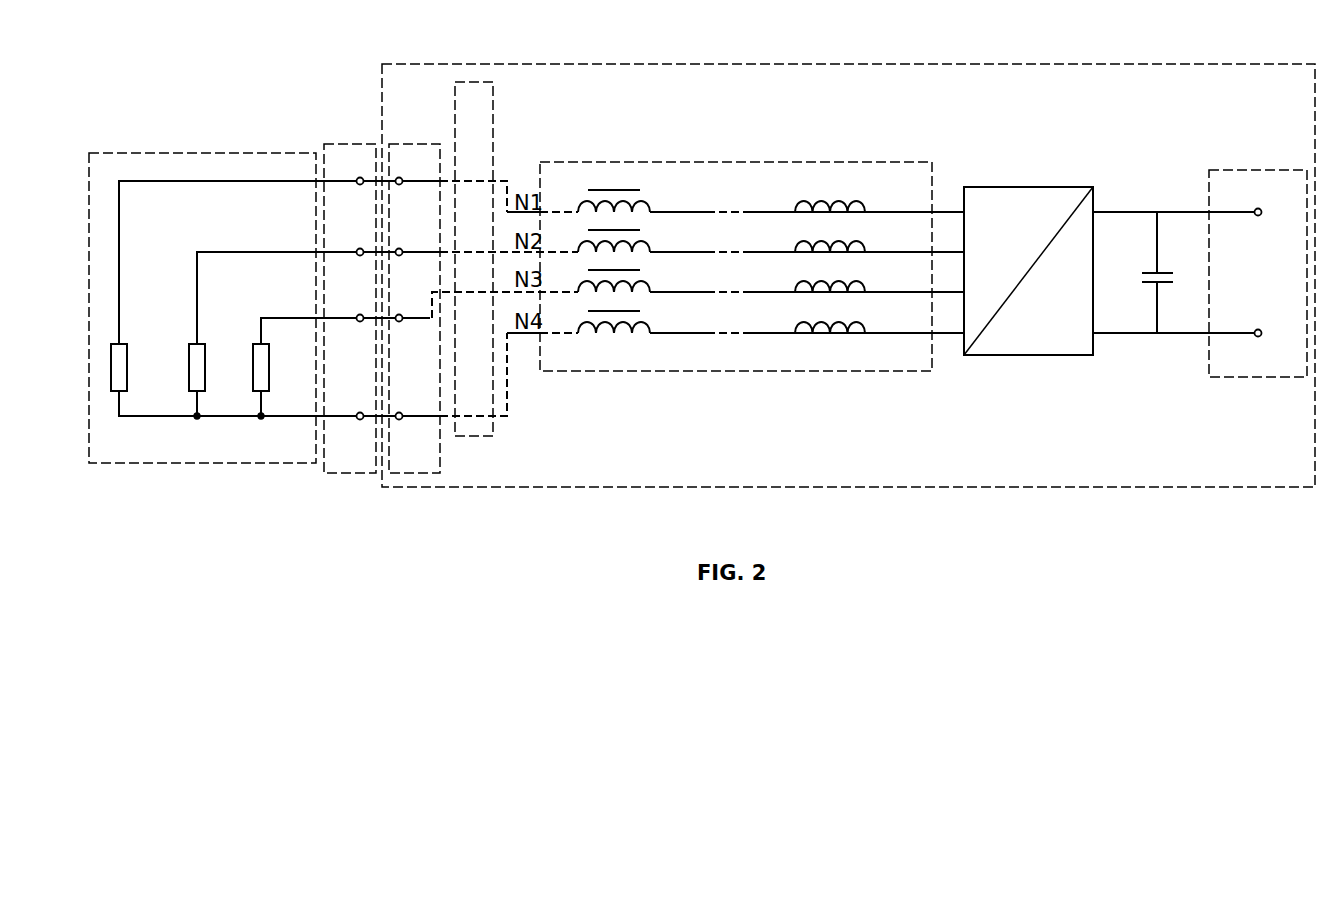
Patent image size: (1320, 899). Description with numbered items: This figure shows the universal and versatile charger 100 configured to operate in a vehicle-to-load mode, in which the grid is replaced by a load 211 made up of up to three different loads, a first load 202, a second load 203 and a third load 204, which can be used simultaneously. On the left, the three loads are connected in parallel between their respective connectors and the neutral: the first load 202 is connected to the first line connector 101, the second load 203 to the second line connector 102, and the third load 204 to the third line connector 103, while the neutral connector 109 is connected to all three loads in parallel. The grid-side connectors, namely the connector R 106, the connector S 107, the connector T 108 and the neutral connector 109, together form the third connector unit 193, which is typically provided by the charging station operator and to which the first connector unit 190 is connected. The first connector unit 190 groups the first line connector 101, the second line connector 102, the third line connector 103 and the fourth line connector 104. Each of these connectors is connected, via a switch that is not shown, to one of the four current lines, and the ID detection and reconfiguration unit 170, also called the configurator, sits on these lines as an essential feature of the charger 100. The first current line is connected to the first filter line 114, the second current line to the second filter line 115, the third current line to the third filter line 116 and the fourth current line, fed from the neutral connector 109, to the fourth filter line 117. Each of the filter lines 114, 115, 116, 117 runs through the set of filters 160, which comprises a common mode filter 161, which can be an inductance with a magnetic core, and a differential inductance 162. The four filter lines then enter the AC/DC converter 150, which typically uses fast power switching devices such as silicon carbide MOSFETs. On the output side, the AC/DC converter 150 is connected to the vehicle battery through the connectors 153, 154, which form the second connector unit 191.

The charger 100 is at (848, 254).
The L1 connector 101 is at (412, 184).
The L2 connector 102 is at (412, 254).
The L3 connector 103 is at (412, 320).
The L4 connector 104 is at (412, 418).
The R connector 106 is at (350, 184).
The S connector 107 is at (350, 254).
The T connector 108 is at (350, 320).
The N connector 109 is at (350, 418).
The filter line 114 is at (807, 196).
The filter line 115 is at (771, 237).
The filter line 116 is at (771, 277).
The filter line 117 is at (771, 318).
The AC/DC converter 150 is at (1028, 257).
The connector 153 is at (1264, 224).
The connector 154 is at (1262, 344).
The set of filters 160 is at (736, 252).
The common mode filter 161 is at (578, 165).
The differential inductance 162 is at (836, 165).
The ID detection and reconfiguration unit 170 is at (475, 274).
The first connector unit 190 is at (414, 295).
The second connector unit 191 is at (1258, 259).
The third connector unit 193 is at (350, 295).
The load R1 202 is at (141, 357).
The load R2 203 is at (218, 357).
The load R3 204 is at (282, 357).
The load 211 is at (264, 325).